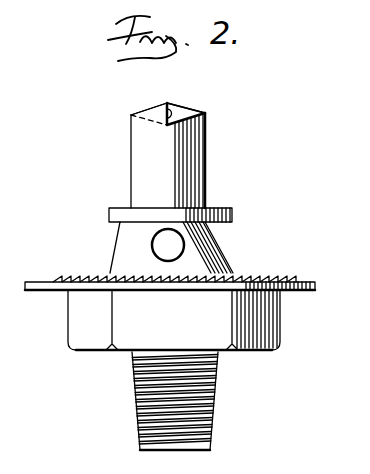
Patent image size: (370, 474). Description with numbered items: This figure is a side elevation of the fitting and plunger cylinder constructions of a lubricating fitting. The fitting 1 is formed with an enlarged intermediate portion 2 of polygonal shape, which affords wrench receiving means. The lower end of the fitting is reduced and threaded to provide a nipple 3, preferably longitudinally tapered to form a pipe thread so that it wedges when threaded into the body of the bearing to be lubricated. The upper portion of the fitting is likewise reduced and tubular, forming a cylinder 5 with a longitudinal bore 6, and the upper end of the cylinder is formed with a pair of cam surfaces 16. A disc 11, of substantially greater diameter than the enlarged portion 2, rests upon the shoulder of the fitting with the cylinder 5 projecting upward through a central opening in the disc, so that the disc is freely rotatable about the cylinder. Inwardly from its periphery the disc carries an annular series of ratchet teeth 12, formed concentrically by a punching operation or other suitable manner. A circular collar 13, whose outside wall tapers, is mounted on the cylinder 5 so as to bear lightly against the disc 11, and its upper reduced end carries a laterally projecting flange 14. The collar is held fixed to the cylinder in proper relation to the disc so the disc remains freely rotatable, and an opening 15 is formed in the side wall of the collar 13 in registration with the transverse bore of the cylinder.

The fitting 1 is at (53, 367).
The enlarged intermediate portion 2 is at (78, 317).
The nipple 3 is at (210, 407).
The cylinder 5 is at (142, 161).
The longitudinal bore 6 is at (173, 110).
The disc 11 is at (36, 285).
The ratchet teeth 12 is at (265, 270).
The collar 13 is at (120, 250).
The flange 14 is at (110, 218).
The opening 15 is at (165, 247).
The cam surfaces 16 is at (150, 107).